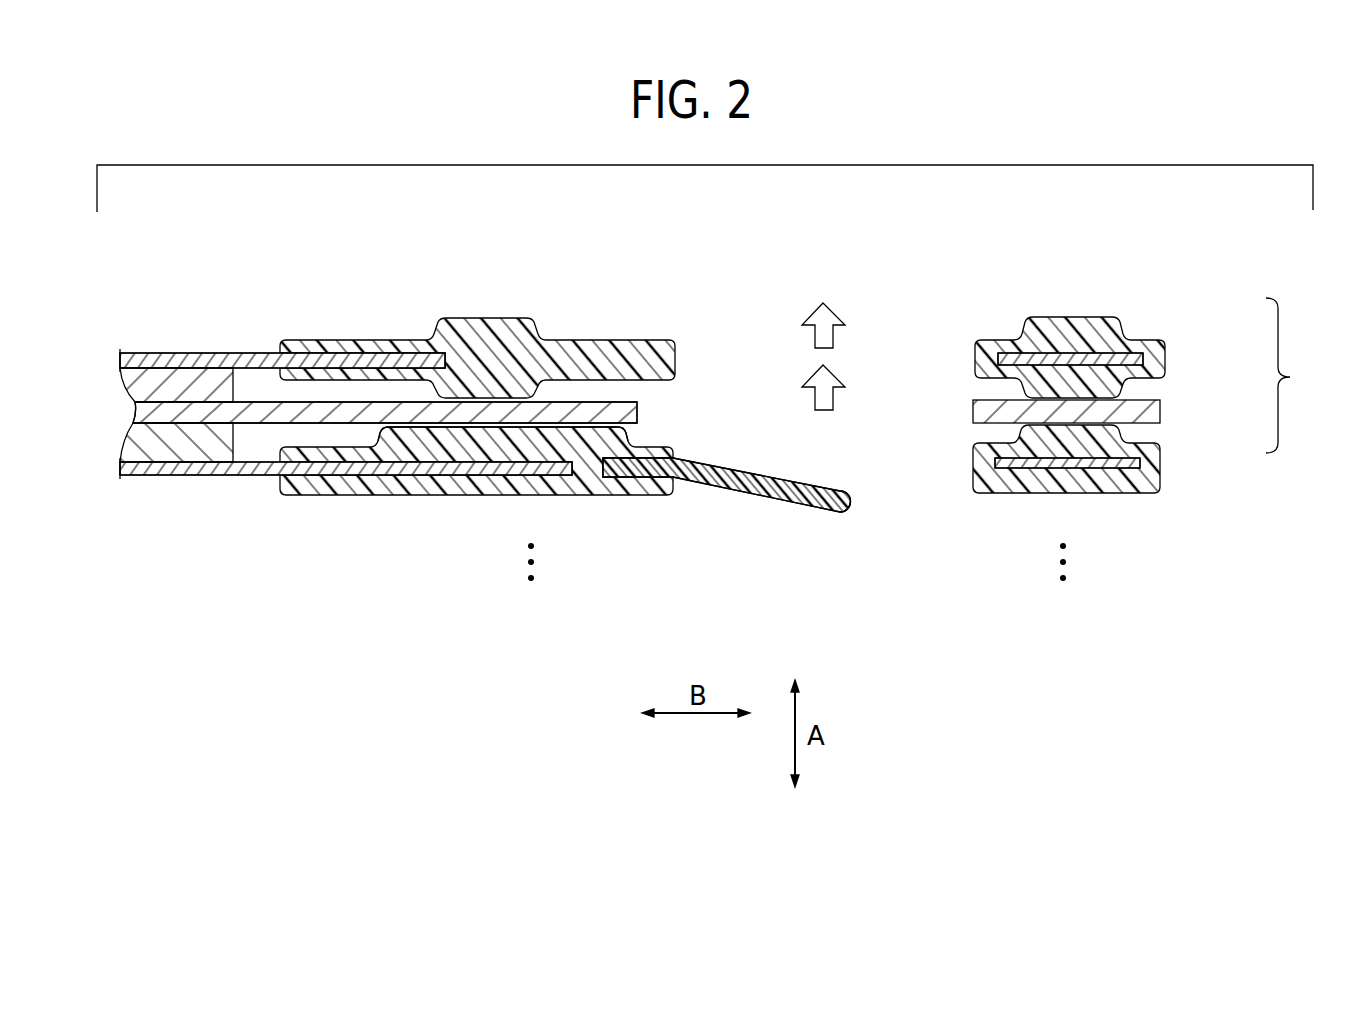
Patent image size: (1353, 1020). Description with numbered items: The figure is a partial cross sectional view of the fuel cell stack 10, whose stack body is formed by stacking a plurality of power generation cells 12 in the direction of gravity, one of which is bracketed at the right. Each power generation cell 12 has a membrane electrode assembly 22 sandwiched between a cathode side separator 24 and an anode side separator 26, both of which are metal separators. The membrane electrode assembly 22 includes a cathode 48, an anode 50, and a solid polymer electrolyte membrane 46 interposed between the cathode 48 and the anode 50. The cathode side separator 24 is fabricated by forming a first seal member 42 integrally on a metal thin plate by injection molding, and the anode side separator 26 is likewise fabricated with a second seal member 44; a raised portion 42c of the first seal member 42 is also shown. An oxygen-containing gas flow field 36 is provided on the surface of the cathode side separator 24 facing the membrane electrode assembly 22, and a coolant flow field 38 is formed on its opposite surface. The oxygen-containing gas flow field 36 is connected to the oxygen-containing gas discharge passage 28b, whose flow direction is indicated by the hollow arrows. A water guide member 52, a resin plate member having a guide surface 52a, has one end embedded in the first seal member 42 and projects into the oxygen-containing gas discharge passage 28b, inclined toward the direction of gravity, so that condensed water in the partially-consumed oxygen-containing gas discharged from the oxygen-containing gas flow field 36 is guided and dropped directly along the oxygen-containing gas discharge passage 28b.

The fuel cell stack 10 is at (1023, 227).
The power generation cell 12 is at (1297, 375).
The membrane electrode assembly 22 is at (689, 491).
The cathode side separator 24 is at (1175, 462).
The anode side separator 26 is at (1176, 339).
The oxygen-containing gas discharge passage 28b is at (912, 452).
The oxygen-containing gas flow field 36 is at (262, 447).
The coolant flow field 38 is at (258, 387).
The first seal member 42 is at (1126, 506).
The separator bump portion 42c is at (482, 433).
The second seal member 44 is at (1090, 305).
The solid polymer electrolyte membrane 46 is at (203, 417).
The cathode 48 is at (167, 447).
The anode 50 is at (235, 388).
The water guide member 52 is at (727, 476).
The guide surface 52a is at (743, 470).